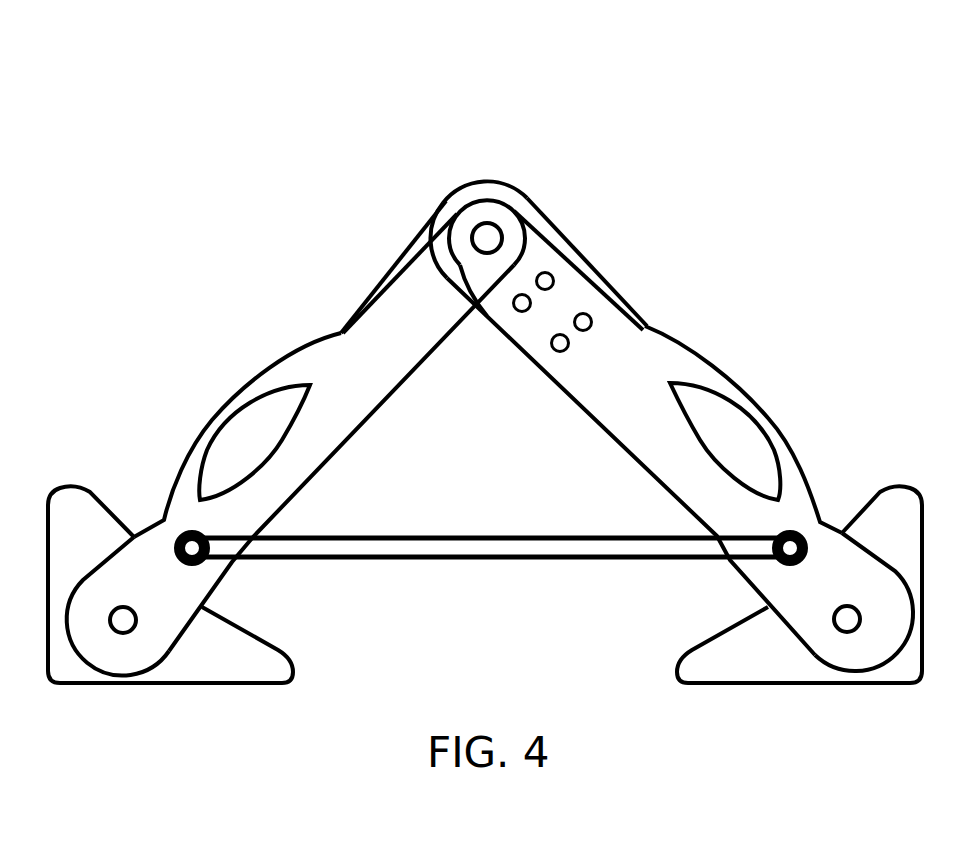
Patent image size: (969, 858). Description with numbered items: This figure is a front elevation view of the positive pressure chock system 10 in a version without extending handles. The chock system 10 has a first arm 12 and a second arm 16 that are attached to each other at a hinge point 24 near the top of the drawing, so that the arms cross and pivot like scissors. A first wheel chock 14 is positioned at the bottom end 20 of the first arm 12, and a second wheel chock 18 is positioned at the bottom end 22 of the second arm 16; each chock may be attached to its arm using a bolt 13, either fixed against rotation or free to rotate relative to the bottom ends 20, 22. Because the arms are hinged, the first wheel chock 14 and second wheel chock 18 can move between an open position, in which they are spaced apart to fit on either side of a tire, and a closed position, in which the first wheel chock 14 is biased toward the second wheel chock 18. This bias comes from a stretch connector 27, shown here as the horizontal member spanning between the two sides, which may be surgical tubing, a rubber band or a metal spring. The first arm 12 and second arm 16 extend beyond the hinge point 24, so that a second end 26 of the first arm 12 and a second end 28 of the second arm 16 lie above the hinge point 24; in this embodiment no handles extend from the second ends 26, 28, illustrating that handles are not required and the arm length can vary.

The positive pressure chock system 10 is at (777, 104).
The first arm 12 is at (372, 345).
The bolt 13 is at (123, 607).
The first wheel chock 14 is at (272, 668).
The second arm 16 is at (640, 360).
The second wheel chock 18 is at (722, 668).
The bottom end 20 is at (88, 660).
The bottom end 22 is at (888, 662).
The hinge point 24 is at (487, 236).
The second end 26 is at (517, 204).
The stretch connector 27 is at (437, 563).
The second end 28 is at (446, 204).